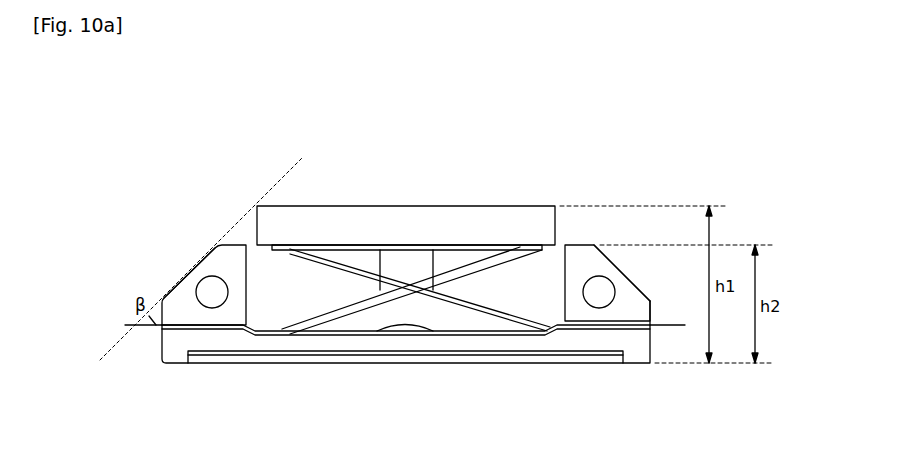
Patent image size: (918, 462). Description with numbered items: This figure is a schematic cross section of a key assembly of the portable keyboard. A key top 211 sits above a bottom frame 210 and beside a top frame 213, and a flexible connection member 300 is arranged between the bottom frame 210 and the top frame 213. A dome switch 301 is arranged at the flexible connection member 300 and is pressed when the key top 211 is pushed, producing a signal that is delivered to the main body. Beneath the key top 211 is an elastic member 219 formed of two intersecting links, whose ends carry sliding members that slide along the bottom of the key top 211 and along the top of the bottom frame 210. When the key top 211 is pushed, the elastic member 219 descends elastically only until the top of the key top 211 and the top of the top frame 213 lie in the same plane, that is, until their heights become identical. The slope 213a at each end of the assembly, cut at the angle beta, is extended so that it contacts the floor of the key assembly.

The key top 211 is at (508, 217).
The top frame 213 is at (188, 293).
The inclined surface of bracket 213a is at (208, 254).
The bottom frame 210 is at (177, 353).
The dome switch 301 is at (412, 334).
The flexible connection member 300 is at (148, 327).
The elastic member 219 is at (353, 307).